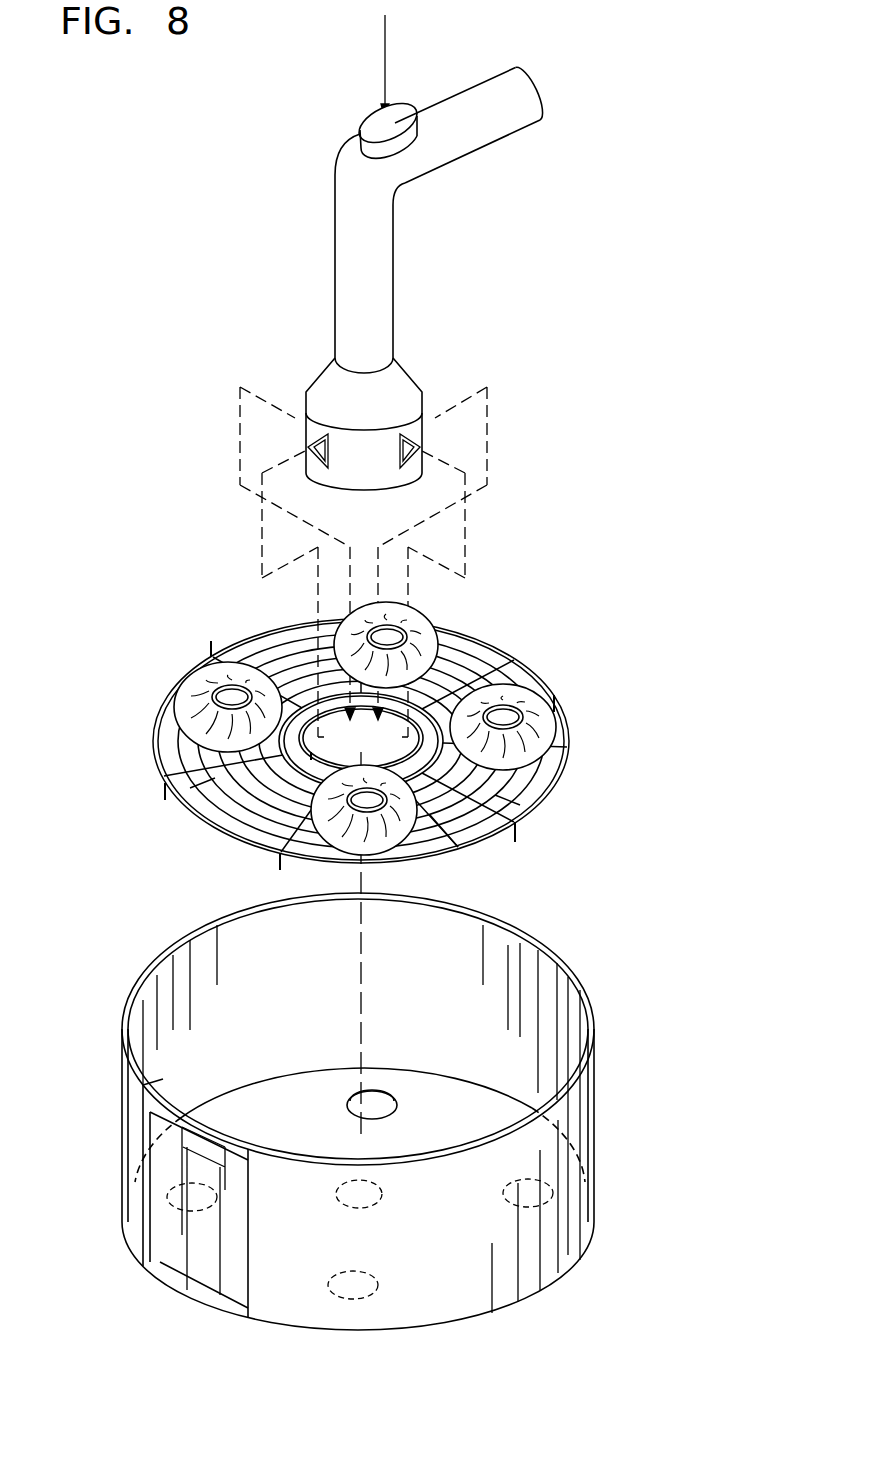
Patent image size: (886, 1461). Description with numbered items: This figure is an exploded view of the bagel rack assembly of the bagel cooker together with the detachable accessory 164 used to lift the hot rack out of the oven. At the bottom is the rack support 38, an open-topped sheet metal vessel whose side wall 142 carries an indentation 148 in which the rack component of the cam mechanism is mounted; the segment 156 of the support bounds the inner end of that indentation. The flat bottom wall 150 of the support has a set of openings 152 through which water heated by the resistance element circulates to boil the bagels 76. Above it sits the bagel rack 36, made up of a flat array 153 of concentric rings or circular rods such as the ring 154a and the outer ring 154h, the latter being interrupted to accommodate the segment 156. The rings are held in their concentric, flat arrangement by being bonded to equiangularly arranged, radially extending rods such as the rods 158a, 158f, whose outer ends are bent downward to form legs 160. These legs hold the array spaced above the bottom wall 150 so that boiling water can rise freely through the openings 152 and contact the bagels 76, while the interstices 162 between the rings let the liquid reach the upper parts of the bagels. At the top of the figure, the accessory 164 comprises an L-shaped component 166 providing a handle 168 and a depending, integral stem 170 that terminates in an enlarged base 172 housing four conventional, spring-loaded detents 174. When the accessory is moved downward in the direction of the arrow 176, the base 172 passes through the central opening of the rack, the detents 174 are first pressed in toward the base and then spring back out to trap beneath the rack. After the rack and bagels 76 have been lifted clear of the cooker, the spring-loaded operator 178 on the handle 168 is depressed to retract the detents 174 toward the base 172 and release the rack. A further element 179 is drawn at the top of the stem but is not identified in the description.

The bagel rack 36 is at (356, 733).
The rack support 38 is at (309, 1111).
The bagels 76 is at (440, 621).
The side wall 142 is at (122, 1058).
The indentation 148 is at (172, 1098).
The bottom wall 150 is at (467, 1136).
The openings 152 is at (373, 1094).
The flat array 153 is at (545, 660).
The ring 154a is at (313, 757).
The outer ring 154h is at (522, 822).
The segment 156 is at (222, 1110).
The radially extending rod 158a is at (191, 786).
The radially extending rod 158f is at (280, 834).
The legs 160 is at (165, 783).
The interstices 162 is at (445, 830).
The accessory 164 is at (326, 216).
The L-shaped component 166 is at (414, 204).
The handle 168 is at (499, 128).
The stem 170 is at (394, 300).
The enlarged base 172 is at (322, 372).
The spring-loaded detents 174 is at (306, 447).
The arrow 176 is at (384, 67).
The spring-loaded operator 178 is at (507, 800).
The cap 179 is at (357, 120).